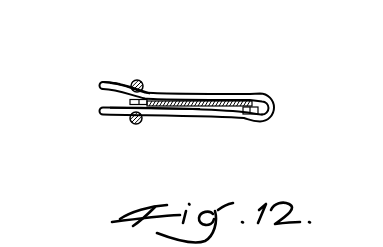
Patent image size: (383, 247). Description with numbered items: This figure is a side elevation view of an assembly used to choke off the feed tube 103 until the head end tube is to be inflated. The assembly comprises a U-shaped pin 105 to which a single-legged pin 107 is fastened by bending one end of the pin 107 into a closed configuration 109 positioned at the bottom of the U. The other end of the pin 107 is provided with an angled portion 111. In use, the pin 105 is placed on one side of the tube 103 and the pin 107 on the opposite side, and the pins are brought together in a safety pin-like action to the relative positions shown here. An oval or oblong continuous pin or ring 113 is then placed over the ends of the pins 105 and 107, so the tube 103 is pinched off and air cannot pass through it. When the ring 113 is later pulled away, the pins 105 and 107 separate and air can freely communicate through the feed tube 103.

The feed tube 103 is at (230, 96).
The U-shaped pin 105 is at (197, 109).
The single-legged pin 107 is at (192, 95).
The closed configuration 109 is at (267, 123).
The angled portion 111 is at (102, 91).
The continuous pin or ring 113 is at (134, 80).